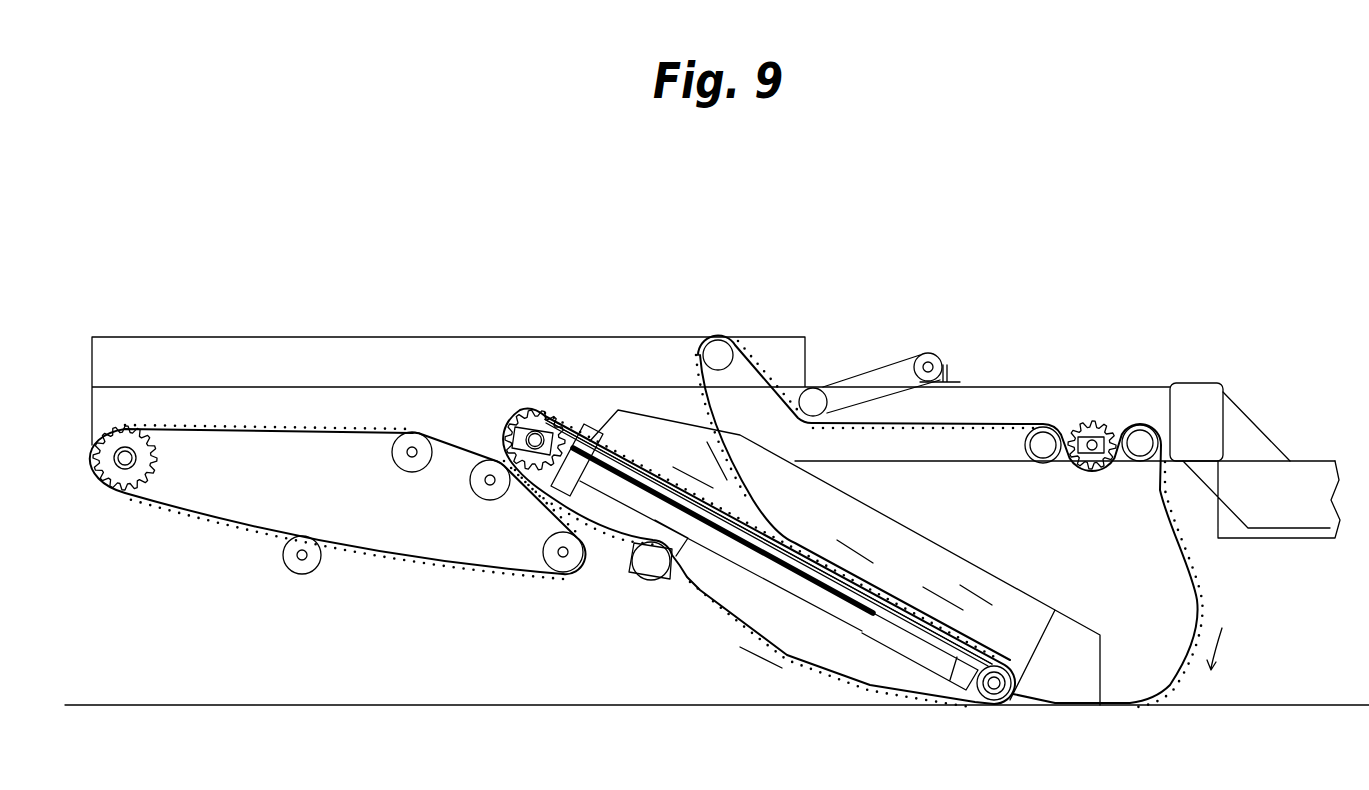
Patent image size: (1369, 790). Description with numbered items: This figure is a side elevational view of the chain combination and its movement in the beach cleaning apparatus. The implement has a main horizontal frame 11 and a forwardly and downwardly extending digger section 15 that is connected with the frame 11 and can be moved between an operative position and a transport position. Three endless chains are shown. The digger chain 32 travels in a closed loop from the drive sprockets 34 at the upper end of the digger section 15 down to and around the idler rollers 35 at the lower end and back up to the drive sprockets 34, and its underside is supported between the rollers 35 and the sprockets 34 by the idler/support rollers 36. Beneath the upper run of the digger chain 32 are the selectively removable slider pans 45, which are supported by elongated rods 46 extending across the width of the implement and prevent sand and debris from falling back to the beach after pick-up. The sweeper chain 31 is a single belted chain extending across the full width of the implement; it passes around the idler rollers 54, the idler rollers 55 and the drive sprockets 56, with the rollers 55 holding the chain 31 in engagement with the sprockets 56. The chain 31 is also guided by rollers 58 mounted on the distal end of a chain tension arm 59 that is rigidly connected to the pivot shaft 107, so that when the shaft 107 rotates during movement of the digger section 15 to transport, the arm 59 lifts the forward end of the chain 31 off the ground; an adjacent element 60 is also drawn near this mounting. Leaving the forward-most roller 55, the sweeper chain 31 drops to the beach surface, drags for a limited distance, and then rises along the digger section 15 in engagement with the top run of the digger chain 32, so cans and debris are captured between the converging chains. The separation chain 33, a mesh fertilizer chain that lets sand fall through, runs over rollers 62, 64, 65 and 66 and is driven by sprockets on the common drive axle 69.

The main horizontal frame 11 is at (633, 348).
The digger section 15 is at (957, 583).
The sweeper chain 31 is at (1198, 603).
The digger chain 32 is at (875, 690).
The separation chain 33 is at (385, 552).
The drive sprockets 34 is at (538, 428).
The idler rollers 35 is at (1000, 690).
The idler/support rollers 36 is at (652, 575).
The slider pans 45 is at (722, 665).
The elongated rods 46 is at (767, 566).
The idler rollers 54 is at (723, 354).
The idler rollers 55 is at (1044, 444).
The drive sprockets 56 is at (1093, 445).
The rollers 58 is at (814, 400).
The chain tension arm 59 is at (888, 376).
The bracket 60 is at (948, 380).
The roller 62 is at (563, 568).
The roller 64 is at (492, 498).
The roller 65 is at (413, 447).
The roller 66 is at (305, 562).
The drive axle 69 is at (130, 445).
The pivot shaft 107 is at (932, 365).